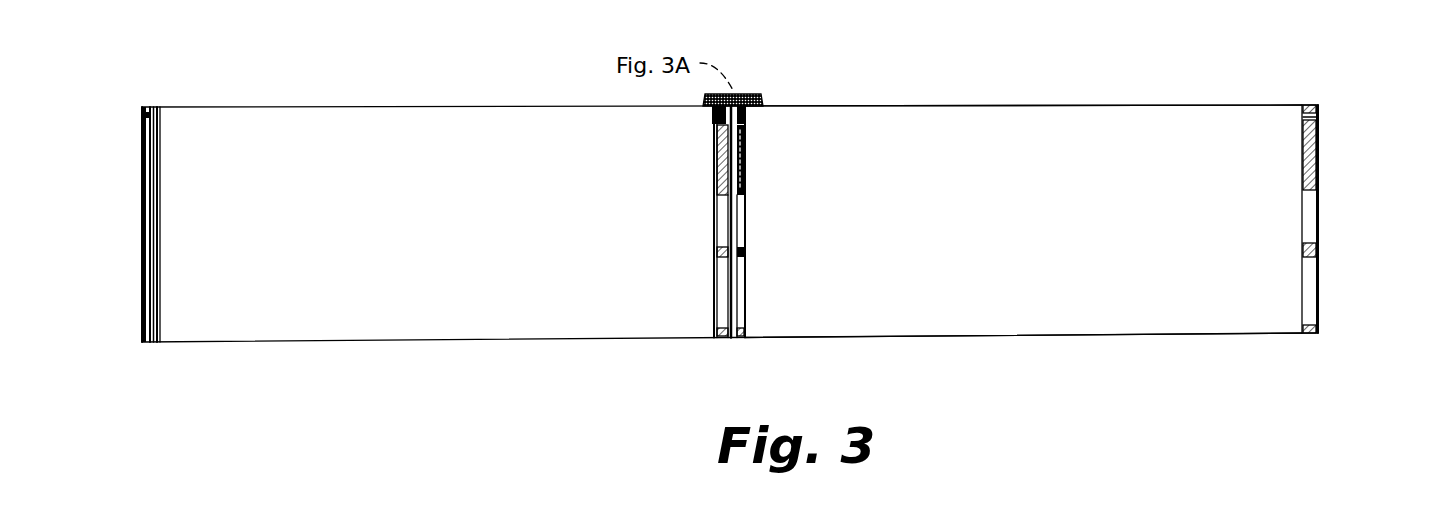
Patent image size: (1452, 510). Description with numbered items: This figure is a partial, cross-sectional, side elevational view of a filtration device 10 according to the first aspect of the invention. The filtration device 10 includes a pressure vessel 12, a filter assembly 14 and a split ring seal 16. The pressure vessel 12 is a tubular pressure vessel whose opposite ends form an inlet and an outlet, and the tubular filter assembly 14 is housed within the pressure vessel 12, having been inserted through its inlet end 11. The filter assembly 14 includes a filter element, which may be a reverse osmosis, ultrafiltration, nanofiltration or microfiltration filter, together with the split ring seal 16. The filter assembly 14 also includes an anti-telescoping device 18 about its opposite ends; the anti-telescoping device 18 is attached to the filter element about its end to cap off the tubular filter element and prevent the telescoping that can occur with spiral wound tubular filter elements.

The filtration device 10 is at (1222, 70).
The inlet end 11 is at (1328, 162).
The pressure vessel 12 is at (763, 94).
The filter assembly 14 is at (1025, 104).
The split ring seal 16 is at (739, 336).
The anti-telescoping device 18 is at (745, 337).